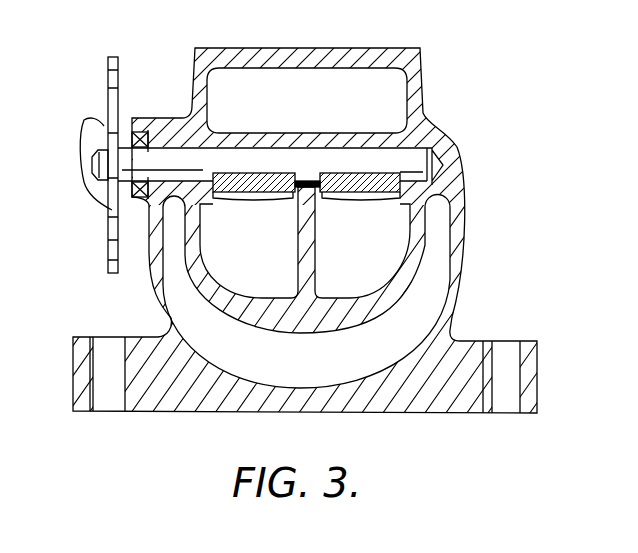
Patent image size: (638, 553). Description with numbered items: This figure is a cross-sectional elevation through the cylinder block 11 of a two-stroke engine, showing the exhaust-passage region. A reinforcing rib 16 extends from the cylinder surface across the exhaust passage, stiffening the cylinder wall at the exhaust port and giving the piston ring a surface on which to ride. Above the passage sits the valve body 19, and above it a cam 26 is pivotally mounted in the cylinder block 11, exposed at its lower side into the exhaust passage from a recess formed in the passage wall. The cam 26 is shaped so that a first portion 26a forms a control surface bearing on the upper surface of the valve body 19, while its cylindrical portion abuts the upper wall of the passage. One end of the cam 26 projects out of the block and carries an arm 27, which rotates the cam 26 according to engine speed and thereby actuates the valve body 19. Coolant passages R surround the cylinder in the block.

The cylinder block 11 is at (476, 239).
The reinforcing rib 16 is at (311, 276).
The valve body 19 is at (253, 199).
The cam 26 is at (283, 148).
The first portion 26a is at (238, 173).
The arm 27 is at (87, 160).
The coolant passages R is at (328, 77).